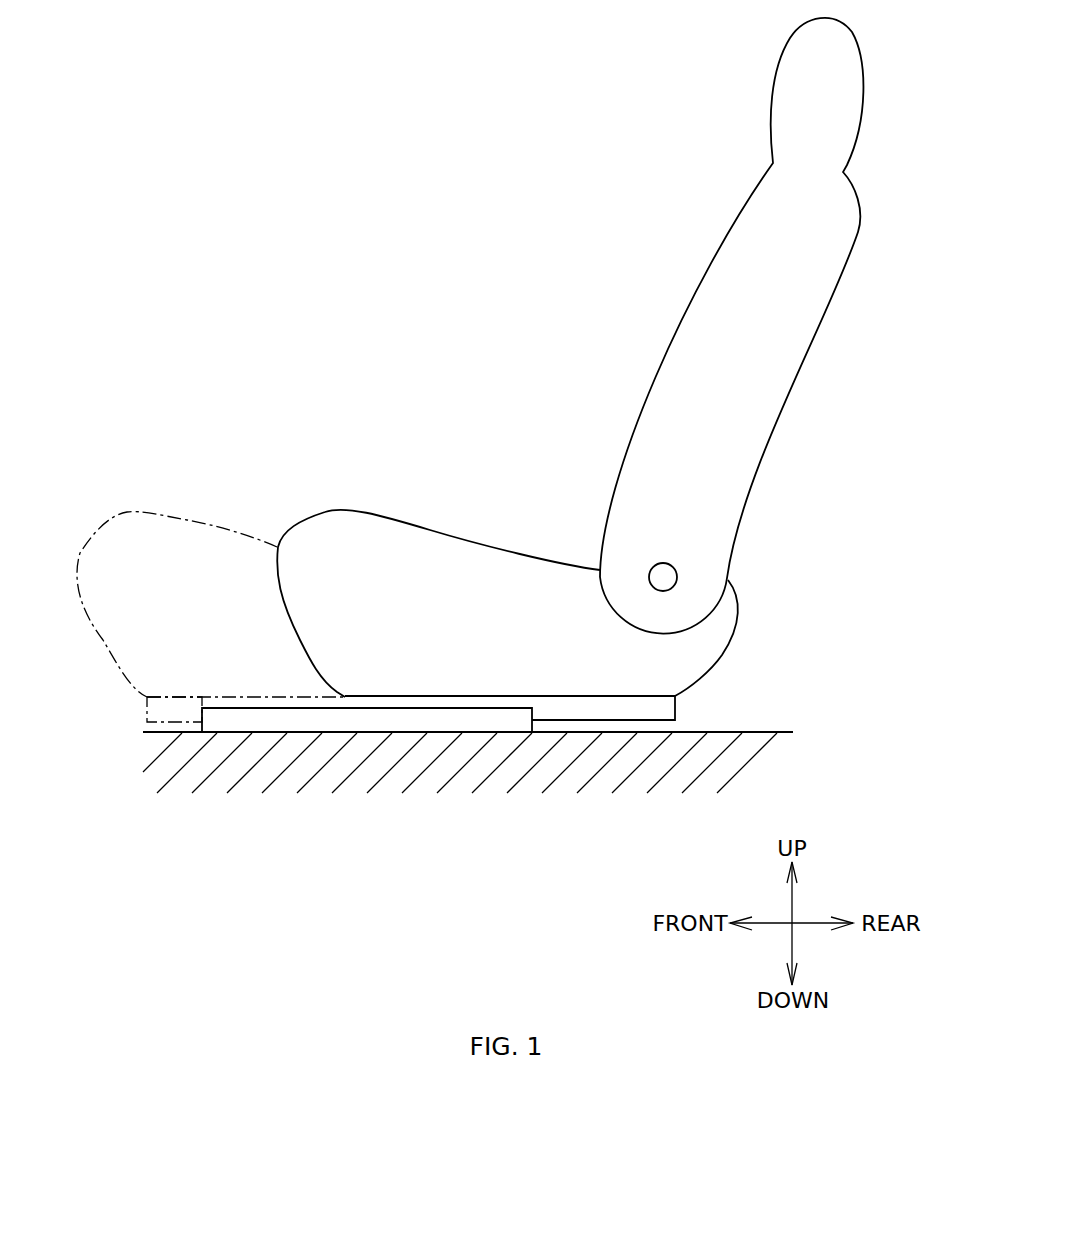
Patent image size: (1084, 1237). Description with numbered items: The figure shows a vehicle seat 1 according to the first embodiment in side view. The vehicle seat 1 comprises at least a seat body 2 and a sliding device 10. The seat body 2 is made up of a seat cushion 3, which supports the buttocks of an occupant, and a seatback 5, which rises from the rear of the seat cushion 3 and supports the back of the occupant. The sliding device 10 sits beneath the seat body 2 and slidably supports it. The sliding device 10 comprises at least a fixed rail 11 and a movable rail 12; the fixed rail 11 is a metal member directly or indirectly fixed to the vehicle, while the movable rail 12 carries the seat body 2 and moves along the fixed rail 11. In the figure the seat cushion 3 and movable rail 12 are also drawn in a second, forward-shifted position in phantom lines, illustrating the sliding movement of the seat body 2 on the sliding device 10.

The vehicle seat 1 is at (458, 258).
The seat body 2 is at (460, 469).
The seat cushion 3 is at (187, 520).
The seatback 5 is at (680, 305).
The sliding device 10 is at (573, 723).
The fixed rail 11 is at (445, 720).
The movable rail 12 is at (143, 712).